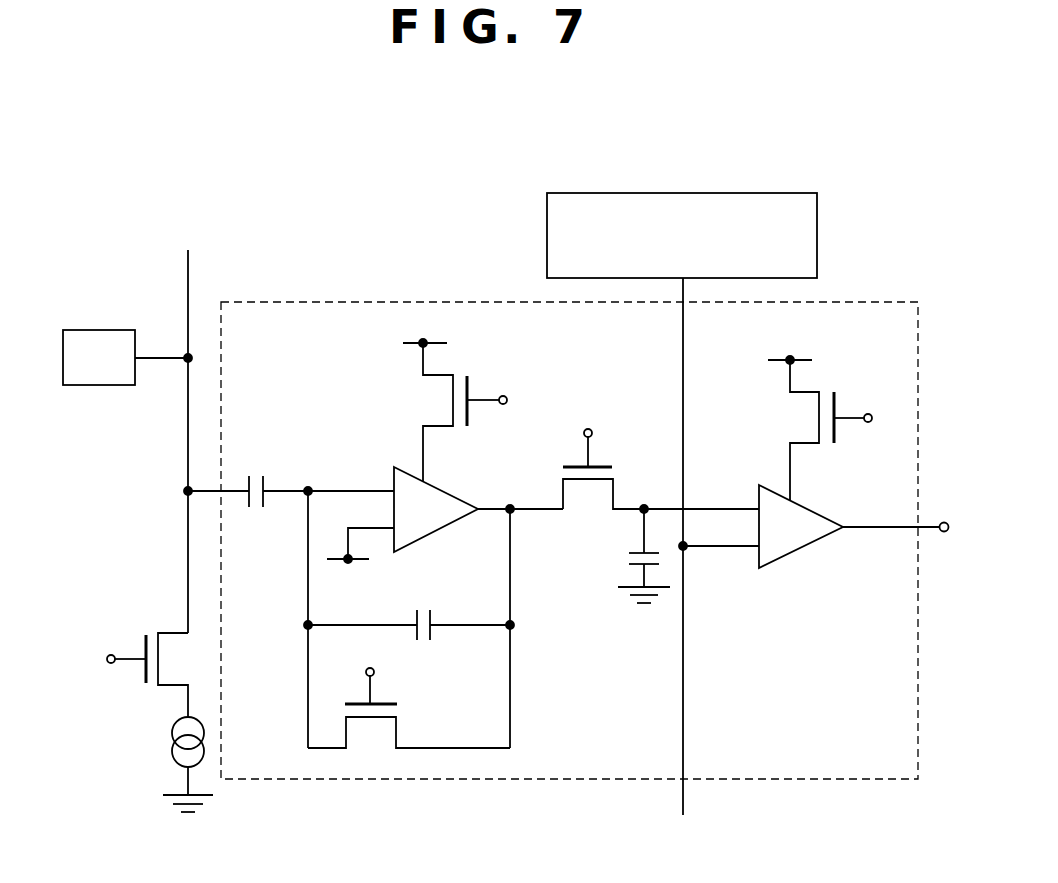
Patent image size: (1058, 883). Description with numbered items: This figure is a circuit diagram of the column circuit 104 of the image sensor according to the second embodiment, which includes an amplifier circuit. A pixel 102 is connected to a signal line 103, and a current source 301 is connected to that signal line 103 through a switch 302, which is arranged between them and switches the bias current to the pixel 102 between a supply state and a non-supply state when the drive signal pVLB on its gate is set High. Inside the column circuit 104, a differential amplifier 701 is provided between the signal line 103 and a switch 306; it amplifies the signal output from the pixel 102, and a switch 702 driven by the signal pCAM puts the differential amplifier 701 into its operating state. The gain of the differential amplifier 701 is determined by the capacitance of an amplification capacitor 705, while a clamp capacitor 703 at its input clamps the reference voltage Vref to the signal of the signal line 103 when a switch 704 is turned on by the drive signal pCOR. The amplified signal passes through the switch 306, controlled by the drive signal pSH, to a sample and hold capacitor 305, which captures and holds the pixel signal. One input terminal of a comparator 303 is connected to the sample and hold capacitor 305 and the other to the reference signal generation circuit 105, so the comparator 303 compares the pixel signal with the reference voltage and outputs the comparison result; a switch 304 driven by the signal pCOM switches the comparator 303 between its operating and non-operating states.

The pixel 102 is at (100, 330).
The signal line 103 is at (189, 268).
The column circuit 104 is at (872, 300).
The reference signal generation circuit 105 is at (733, 193).
The current source 301 is at (171, 734).
The switch 302 is at (173, 633).
The comparator 303 is at (795, 553).
The switch 304 is at (790, 418).
The sample and hold capacitor 305 is at (625, 556).
The switch 306 is at (615, 497).
The differential amplifier 701 is at (433, 532).
The switch 702 is at (423, 398).
The clamp capacitor 703 is at (264, 482).
The switch 704 is at (397, 730).
The amplification capacitor 705 is at (432, 616).